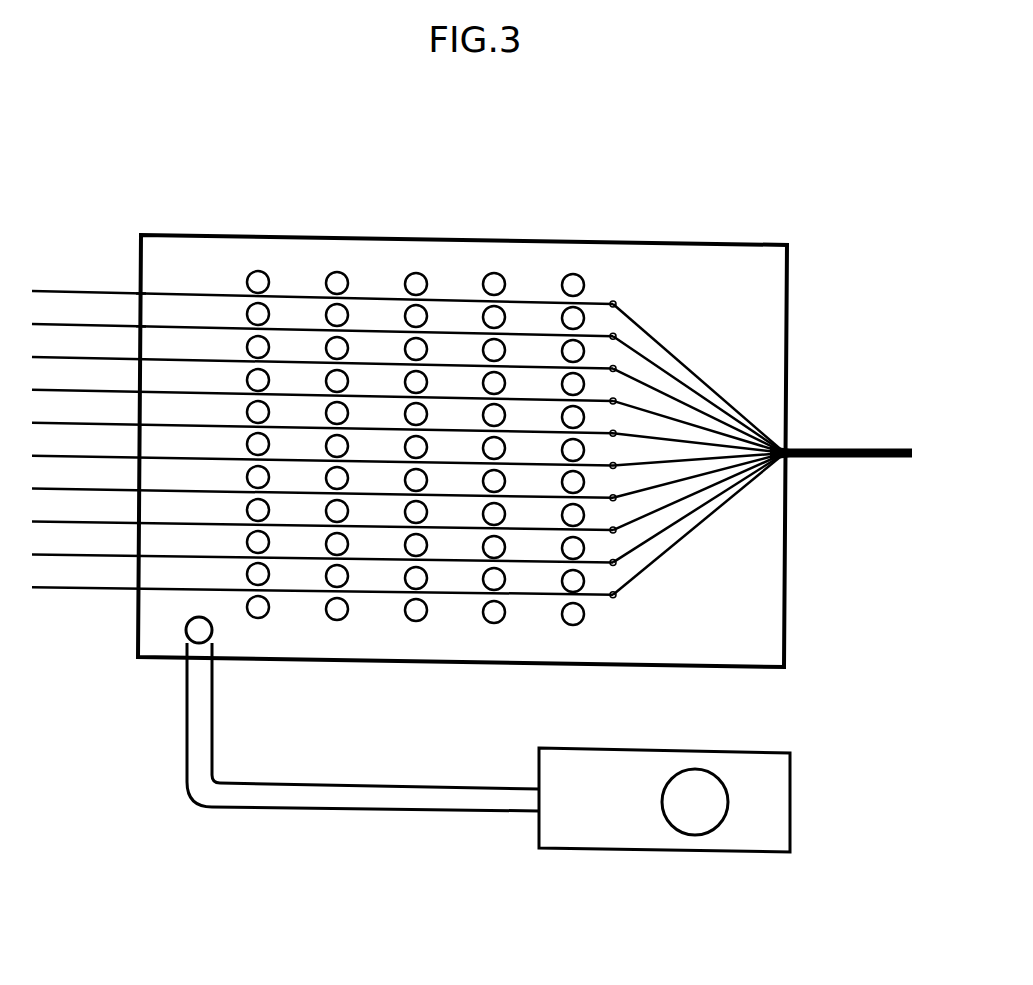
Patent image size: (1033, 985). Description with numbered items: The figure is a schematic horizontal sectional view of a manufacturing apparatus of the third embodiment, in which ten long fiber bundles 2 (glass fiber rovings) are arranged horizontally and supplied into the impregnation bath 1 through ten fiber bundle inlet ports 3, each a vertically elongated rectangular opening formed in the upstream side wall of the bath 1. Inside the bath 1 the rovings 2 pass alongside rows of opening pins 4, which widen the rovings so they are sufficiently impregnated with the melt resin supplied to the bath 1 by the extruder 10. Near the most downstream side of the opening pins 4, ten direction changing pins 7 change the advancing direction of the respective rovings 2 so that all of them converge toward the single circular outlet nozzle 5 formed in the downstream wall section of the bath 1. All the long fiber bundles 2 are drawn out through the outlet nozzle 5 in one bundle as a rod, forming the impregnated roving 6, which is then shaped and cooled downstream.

The impregnation bath 1 is at (377, 232).
The long fiber bundles 2 is at (70, 357).
The fiber bundle inlet ports 3 is at (141, 325).
The opening pins 4 is at (494, 284).
The outlet nozzle 5 is at (790, 449).
The impregnated roving 6 is at (853, 449).
The direction changing pins 7 is at (613, 530).
The extruder 10 is at (768, 768).